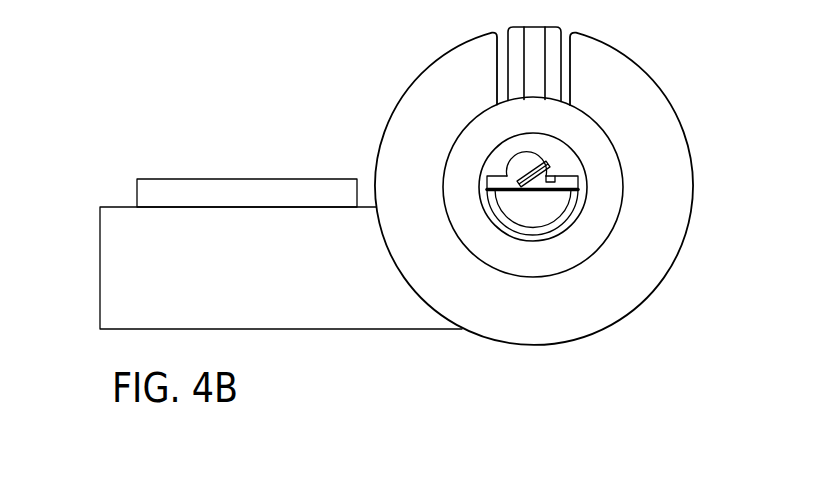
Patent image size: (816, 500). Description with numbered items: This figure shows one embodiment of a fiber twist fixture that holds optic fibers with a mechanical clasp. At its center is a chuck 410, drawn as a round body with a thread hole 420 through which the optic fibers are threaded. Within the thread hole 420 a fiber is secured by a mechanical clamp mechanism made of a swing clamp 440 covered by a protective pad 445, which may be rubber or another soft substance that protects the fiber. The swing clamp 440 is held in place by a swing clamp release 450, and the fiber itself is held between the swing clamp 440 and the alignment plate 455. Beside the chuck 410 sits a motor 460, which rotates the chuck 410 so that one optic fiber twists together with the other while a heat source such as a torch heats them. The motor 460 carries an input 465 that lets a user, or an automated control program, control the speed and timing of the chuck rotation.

The chuck 410 is at (670, 97).
The thread hole 420 is at (511, 164).
The swing clamp 440 is at (548, 163).
The protective pad 445 is at (555, 172).
The swing clamp release 450 is at (580, 176).
The alignment plate 455 is at (588, 188).
The motor 460 is at (100, 255).
The motor input 465 is at (250, 178).